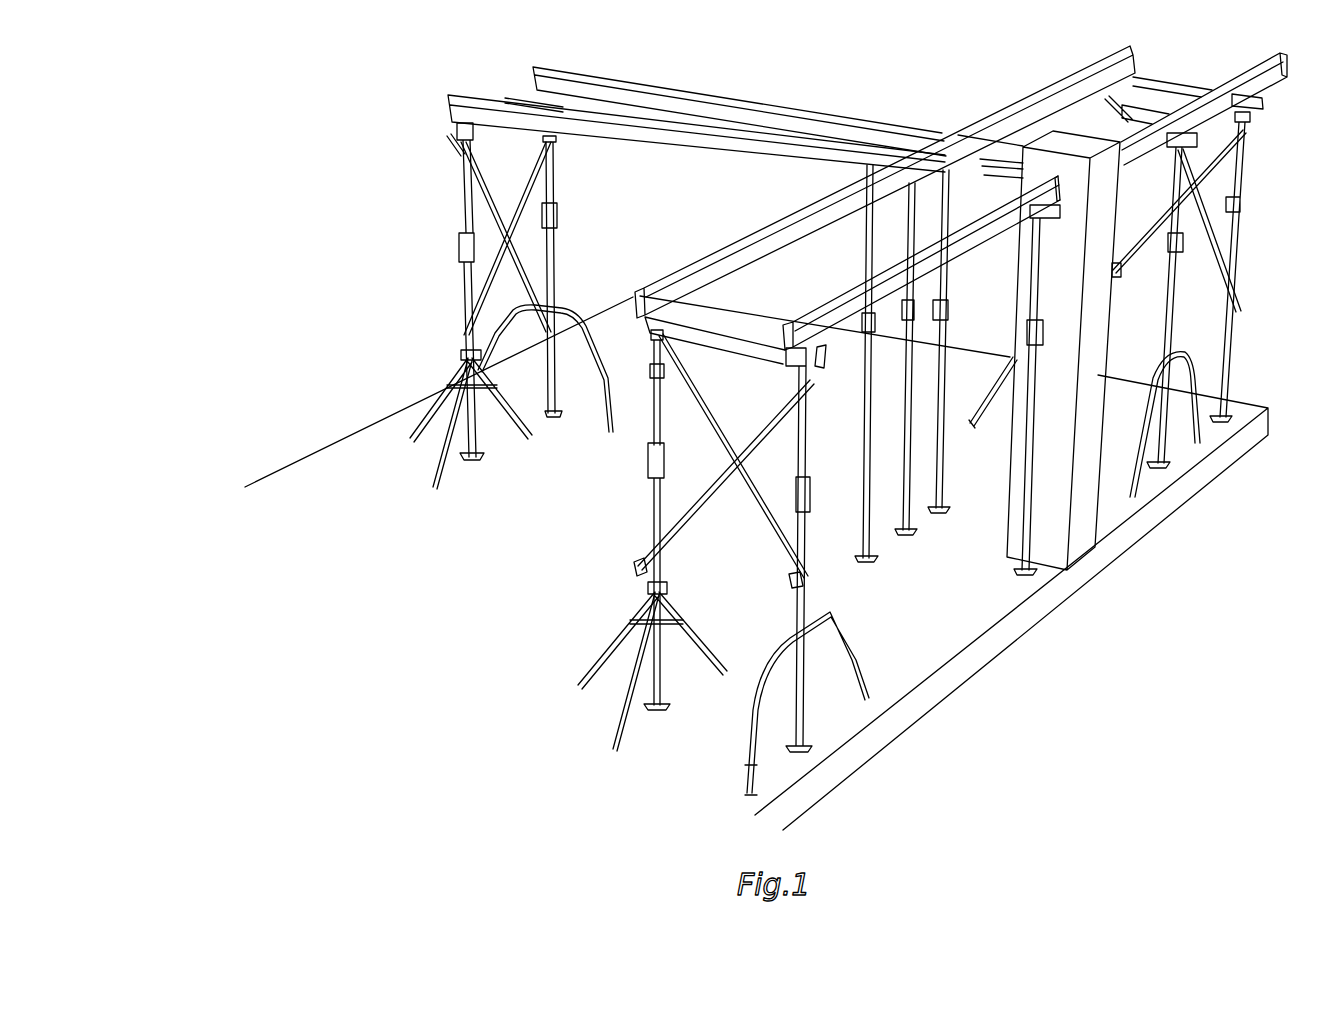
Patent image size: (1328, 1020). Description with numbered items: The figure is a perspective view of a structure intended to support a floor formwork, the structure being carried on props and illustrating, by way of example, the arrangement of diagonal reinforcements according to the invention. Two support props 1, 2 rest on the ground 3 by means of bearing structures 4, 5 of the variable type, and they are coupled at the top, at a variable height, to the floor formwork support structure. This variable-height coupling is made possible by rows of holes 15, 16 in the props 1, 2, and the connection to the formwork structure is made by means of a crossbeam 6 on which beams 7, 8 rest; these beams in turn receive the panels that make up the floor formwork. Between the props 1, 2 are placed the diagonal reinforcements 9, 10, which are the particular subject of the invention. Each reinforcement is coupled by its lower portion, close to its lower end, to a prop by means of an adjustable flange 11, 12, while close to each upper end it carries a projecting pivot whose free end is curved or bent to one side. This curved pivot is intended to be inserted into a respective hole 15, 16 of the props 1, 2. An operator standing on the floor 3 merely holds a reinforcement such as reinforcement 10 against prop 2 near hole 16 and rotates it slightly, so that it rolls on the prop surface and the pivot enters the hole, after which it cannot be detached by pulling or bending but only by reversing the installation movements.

The support prop 1 is at (652, 480).
The support prop 2 is at (797, 527).
The ground 3 is at (550, 613).
The bearing structure 4 is at (576, 631).
The bearing structure 5 is at (741, 723).
The crossbeam 6 is at (711, 333).
The beam 7 is at (861, 200).
The beam 8 is at (998, 232).
The diagonal reinforcement 9 is at (688, 402).
The diagonal reinforcement 10 is at (760, 423).
The adjustable flange 11 is at (653, 547).
The adjustable flange 12 is at (793, 580).
The hole 15 is at (650, 372).
The hole 16 is at (817, 405).